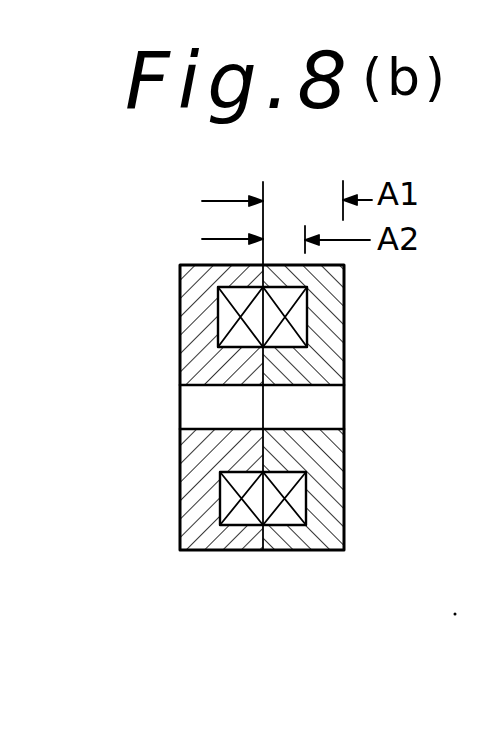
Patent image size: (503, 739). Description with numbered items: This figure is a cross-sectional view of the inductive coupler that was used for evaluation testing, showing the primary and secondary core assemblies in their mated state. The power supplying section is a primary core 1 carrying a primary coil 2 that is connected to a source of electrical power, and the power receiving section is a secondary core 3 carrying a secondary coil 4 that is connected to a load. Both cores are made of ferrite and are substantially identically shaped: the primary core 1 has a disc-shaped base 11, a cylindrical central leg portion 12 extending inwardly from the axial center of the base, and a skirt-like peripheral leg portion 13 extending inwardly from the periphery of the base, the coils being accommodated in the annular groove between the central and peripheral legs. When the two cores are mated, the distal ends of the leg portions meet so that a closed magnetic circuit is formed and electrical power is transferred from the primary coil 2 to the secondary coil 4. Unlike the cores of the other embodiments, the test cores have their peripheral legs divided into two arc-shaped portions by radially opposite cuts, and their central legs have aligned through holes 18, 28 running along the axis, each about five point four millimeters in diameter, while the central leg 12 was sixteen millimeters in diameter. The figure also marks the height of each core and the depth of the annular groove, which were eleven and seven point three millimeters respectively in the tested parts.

The primary core 1 is at (158, 318).
The primary coil 2 is at (230, 317).
The secondary core 3 is at (360, 320).
The secondary coil 4 is at (270, 317).
The disc-shaped base 11 is at (202, 493).
The central leg portion 12 is at (238, 450).
The peripheral leg portion 13 is at (235, 537).
The through hole 18 is at (207, 408).
The through hole 28 is at (328, 410).